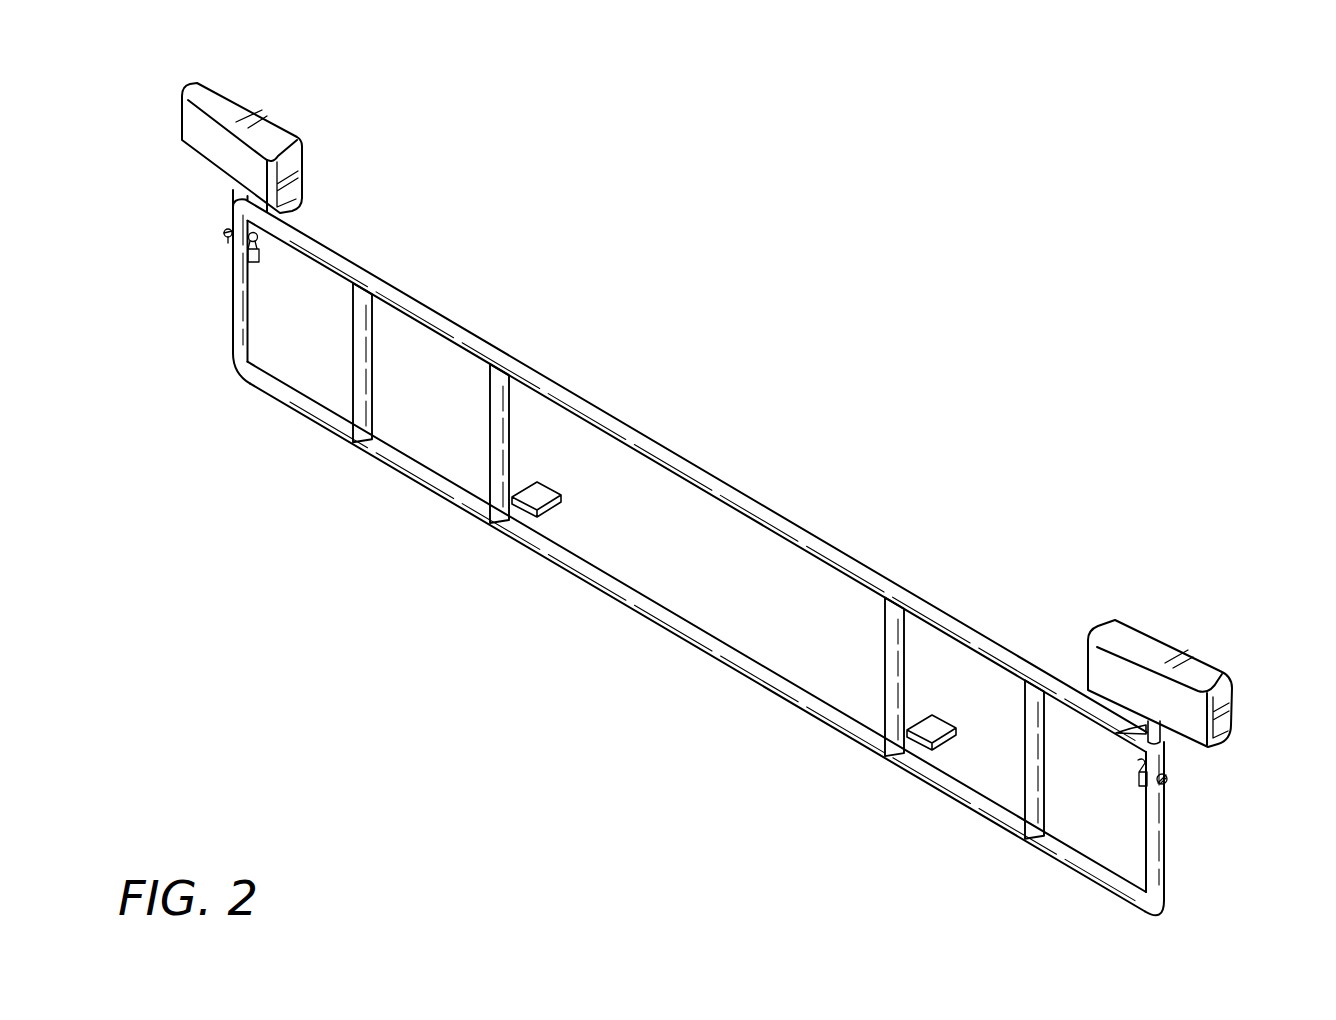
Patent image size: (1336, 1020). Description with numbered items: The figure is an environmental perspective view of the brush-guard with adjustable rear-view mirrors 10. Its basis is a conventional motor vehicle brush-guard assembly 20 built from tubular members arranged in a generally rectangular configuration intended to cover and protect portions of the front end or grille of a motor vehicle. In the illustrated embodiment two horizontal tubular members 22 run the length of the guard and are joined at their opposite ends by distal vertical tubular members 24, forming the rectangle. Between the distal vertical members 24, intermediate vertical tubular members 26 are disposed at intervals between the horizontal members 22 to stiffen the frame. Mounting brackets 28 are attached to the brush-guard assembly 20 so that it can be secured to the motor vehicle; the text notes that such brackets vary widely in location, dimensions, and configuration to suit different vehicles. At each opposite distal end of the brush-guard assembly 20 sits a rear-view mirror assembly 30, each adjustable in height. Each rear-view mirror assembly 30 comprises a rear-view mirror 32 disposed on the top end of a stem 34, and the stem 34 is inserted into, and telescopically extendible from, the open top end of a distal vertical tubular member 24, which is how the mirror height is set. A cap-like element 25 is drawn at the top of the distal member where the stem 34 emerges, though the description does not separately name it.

The brush-guard with adjustable rear-view mirrors 10 is at (1051, 117).
The brush-guard assembly 20 is at (239, 378).
The horizontal tubular members 22 is at (733, 488).
The distal vertical tubular members 24 is at (233, 290).
The post cap coupling 25 is at (1160, 738).
The intermediate vertical tubular members 26 is at (490, 396).
The mounting brackets 28 is at (548, 511).
The rear-view mirror assembly 30 is at (341, 144).
The rear-view mirror 32 is at (238, 88).
The stem 34 is at (1120, 731).